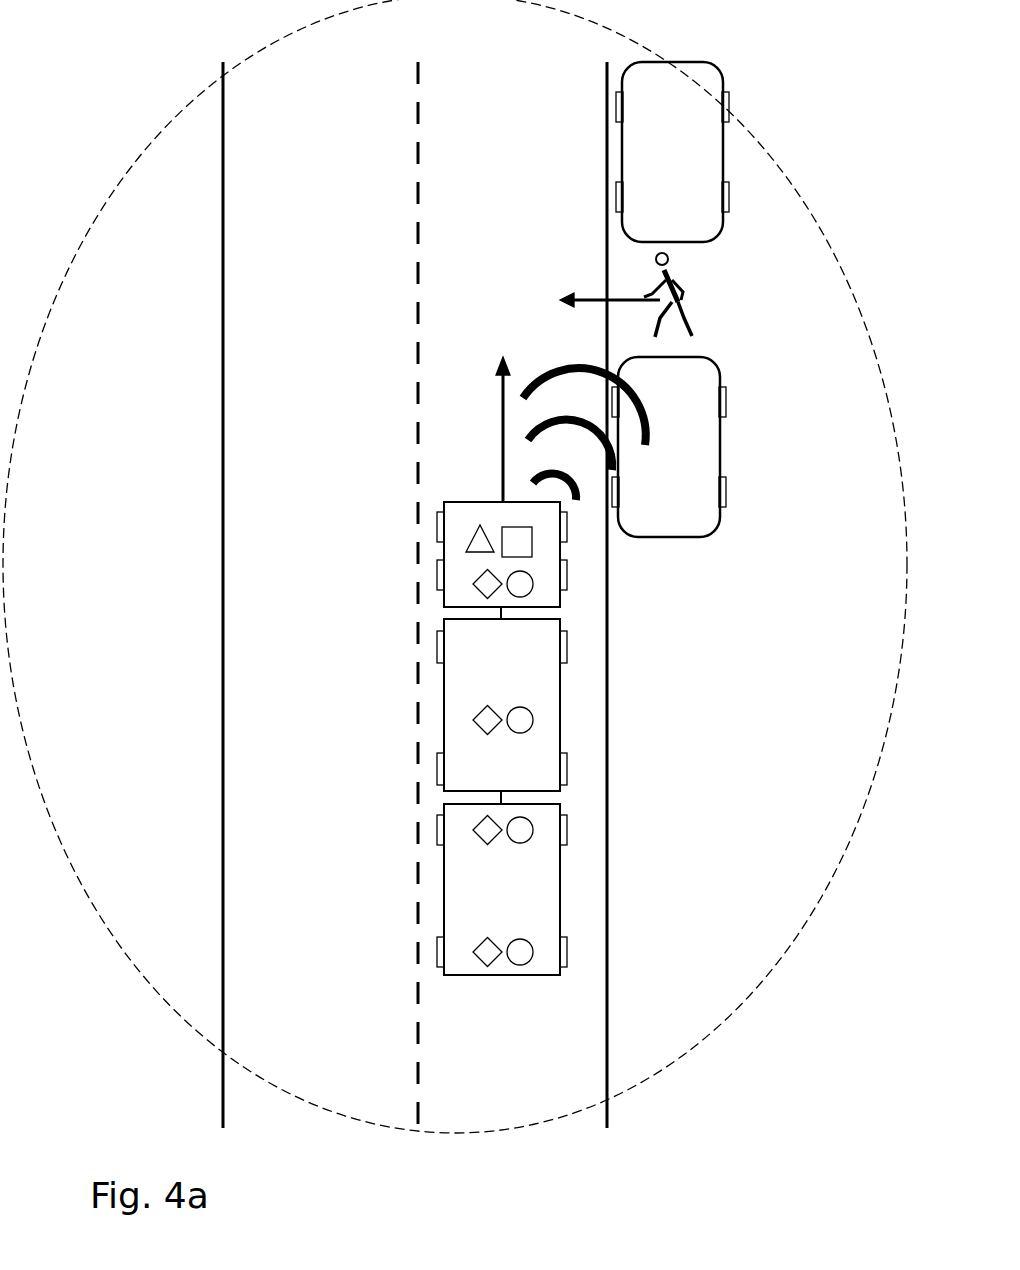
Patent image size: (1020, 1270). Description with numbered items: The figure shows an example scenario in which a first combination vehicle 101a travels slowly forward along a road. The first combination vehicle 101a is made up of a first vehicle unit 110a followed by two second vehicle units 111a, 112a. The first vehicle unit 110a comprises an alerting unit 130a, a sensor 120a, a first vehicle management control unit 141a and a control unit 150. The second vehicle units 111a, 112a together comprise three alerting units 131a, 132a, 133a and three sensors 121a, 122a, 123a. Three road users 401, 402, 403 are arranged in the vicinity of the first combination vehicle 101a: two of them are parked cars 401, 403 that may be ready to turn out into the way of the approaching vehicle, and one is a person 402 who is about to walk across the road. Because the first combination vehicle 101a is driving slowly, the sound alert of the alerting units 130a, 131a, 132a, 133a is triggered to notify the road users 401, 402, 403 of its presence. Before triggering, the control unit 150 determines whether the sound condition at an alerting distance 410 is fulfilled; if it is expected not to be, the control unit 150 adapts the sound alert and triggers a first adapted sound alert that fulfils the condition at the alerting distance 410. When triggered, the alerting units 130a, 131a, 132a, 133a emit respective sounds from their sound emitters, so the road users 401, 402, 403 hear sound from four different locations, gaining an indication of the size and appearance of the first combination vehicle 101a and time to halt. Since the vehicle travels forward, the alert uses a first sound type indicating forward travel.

The first combination vehicle 101a is at (430, 502).
The first vehicle unit 110a is at (519, 555).
The second vehicle unit 111a is at (523, 711).
The second vehicle unit 112a is at (515, 908).
The sensor 120a is at (478, 594).
The sensor 121a is at (478, 730).
The sensor 122a is at (477, 836).
The sensor 123a is at (478, 948).
The alerting unit 130a is at (533, 587).
The alerting unit 131a is at (533, 723).
The alerting unit 132a is at (533, 833).
The alerting unit 133a is at (533, 955).
The first vehicle management control unit 141a is at (466, 548).
The control unit 150 is at (510, 528).
The road user (parked car) 401 is at (669, 447).
The road user (person) 402 is at (684, 305).
The road user (parked car) 403 is at (672, 152).
The alerting distance 410 is at (699, 1058).